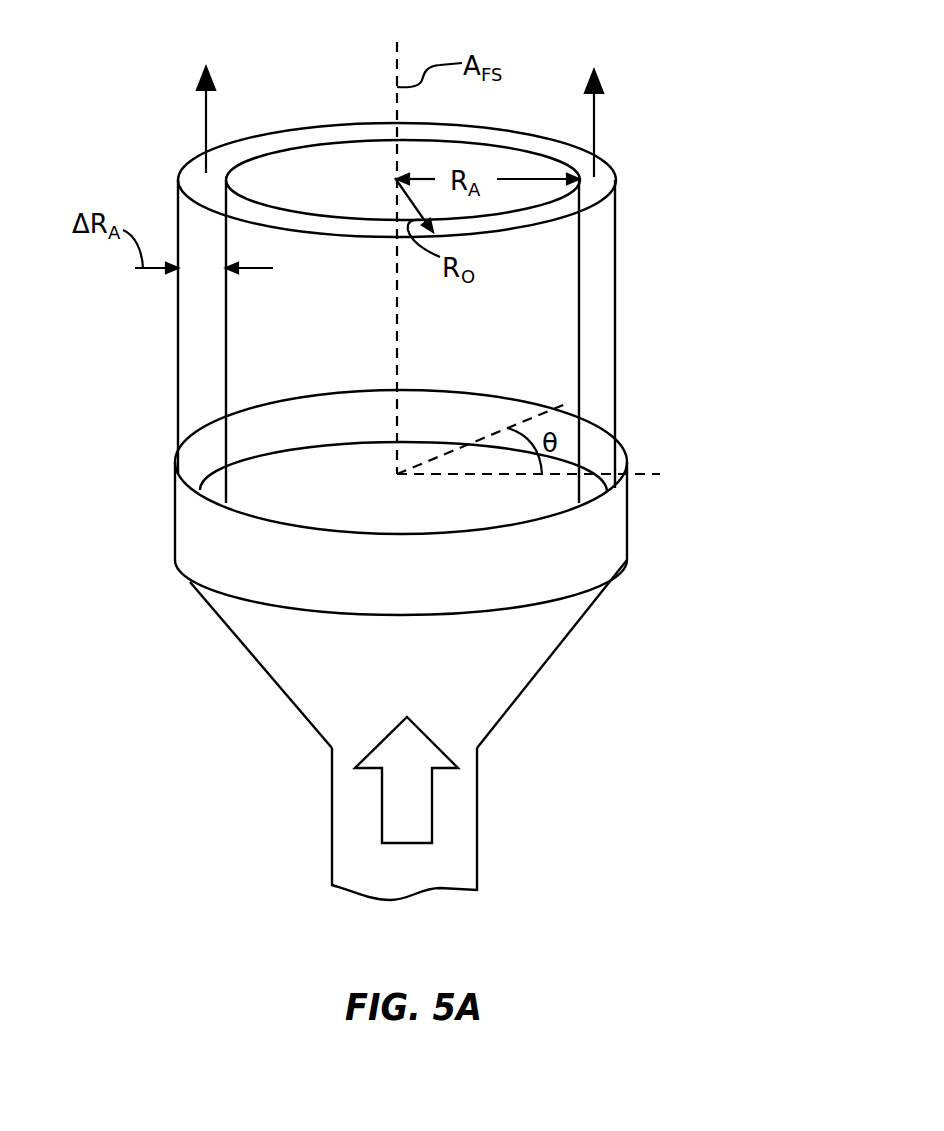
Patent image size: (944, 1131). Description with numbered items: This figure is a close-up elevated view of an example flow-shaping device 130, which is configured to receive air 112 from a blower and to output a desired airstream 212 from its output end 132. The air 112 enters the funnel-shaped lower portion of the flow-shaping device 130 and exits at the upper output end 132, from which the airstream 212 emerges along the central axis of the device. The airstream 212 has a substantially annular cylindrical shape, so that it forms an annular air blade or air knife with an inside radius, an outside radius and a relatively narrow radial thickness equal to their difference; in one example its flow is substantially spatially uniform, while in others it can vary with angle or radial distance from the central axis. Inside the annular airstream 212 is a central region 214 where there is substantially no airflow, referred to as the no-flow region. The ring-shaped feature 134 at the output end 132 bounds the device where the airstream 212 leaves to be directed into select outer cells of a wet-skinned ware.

The airstream 212 is at (640, 241).
The central region 214 is at (334, 160).
The output end 132 is at (353, 395).
The ring side wall 134 is at (628, 497).
The flow-shaping device 130 is at (590, 664).
The air 112 is at (432, 803).